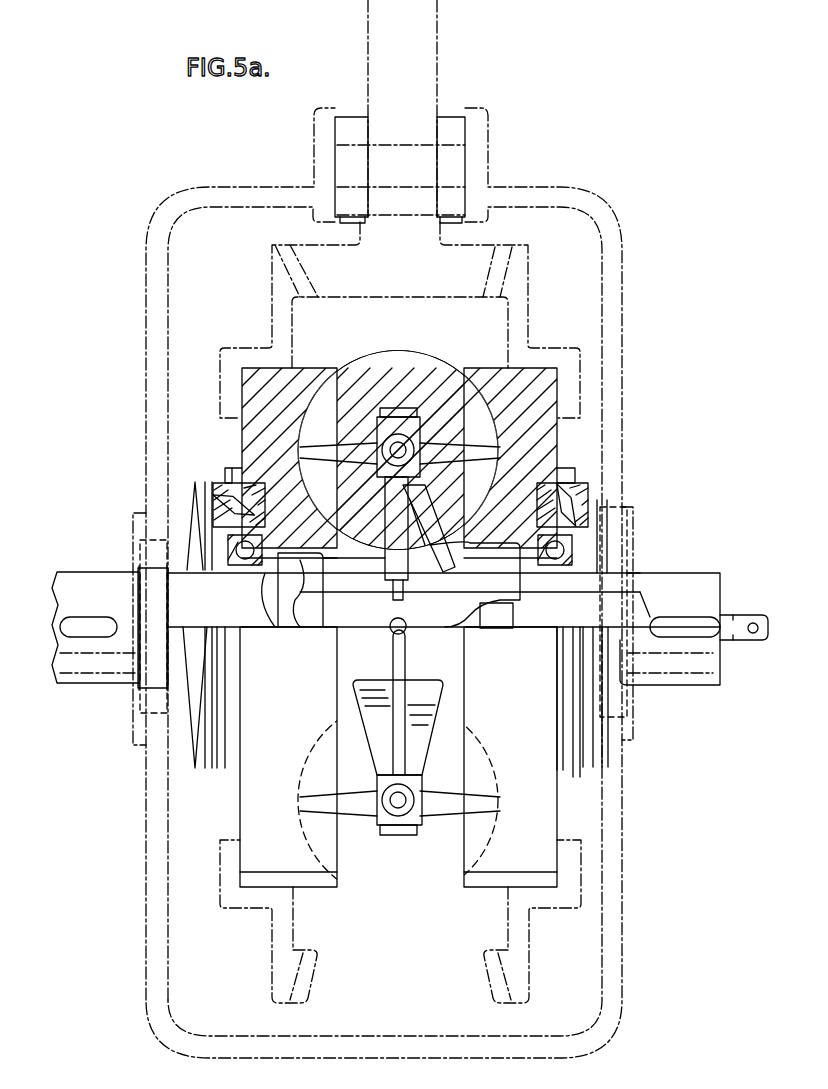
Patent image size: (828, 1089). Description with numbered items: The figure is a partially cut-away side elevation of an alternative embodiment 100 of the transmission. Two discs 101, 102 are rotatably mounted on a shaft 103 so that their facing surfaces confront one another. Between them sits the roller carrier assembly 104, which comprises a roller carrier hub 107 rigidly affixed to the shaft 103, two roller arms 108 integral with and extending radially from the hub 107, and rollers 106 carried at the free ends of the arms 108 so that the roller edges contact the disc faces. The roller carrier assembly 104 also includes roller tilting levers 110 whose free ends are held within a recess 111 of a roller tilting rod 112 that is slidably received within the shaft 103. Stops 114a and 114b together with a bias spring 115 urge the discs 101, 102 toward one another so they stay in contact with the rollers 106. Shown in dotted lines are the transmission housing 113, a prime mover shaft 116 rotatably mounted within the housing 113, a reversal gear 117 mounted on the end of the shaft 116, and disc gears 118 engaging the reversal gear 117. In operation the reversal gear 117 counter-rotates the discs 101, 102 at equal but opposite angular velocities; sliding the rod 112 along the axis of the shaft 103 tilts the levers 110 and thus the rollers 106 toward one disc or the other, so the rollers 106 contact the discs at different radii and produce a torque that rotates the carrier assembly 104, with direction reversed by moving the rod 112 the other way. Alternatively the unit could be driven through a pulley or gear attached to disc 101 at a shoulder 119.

The alternative embodiment 100 is at (590, 94).
The disc 101 is at (275, 378).
The disc 102 is at (553, 385).
The shaft 103 is at (680, 587).
The roller carrier assembly 104 is at (443, 413).
The roller 106 is at (453, 453).
The roller carrier hub 107 is at (497, 570).
The roller arm 108 is at (430, 543).
The roller tilting lever 110 is at (396, 525).
The recess 111 is at (392, 631).
The roller tilting rod 112 is at (730, 618).
The transmission housing 113 is at (148, 446).
The stop 114a is at (177, 710).
The stop 114b is at (588, 700).
The bias spring 115 is at (193, 560).
The prime mover shaft 116 is at (385, 55).
The reversal gear 117 is at (455, 266).
The disc gear 118 is at (274, 248).
The shoulder 119 is at (232, 468).